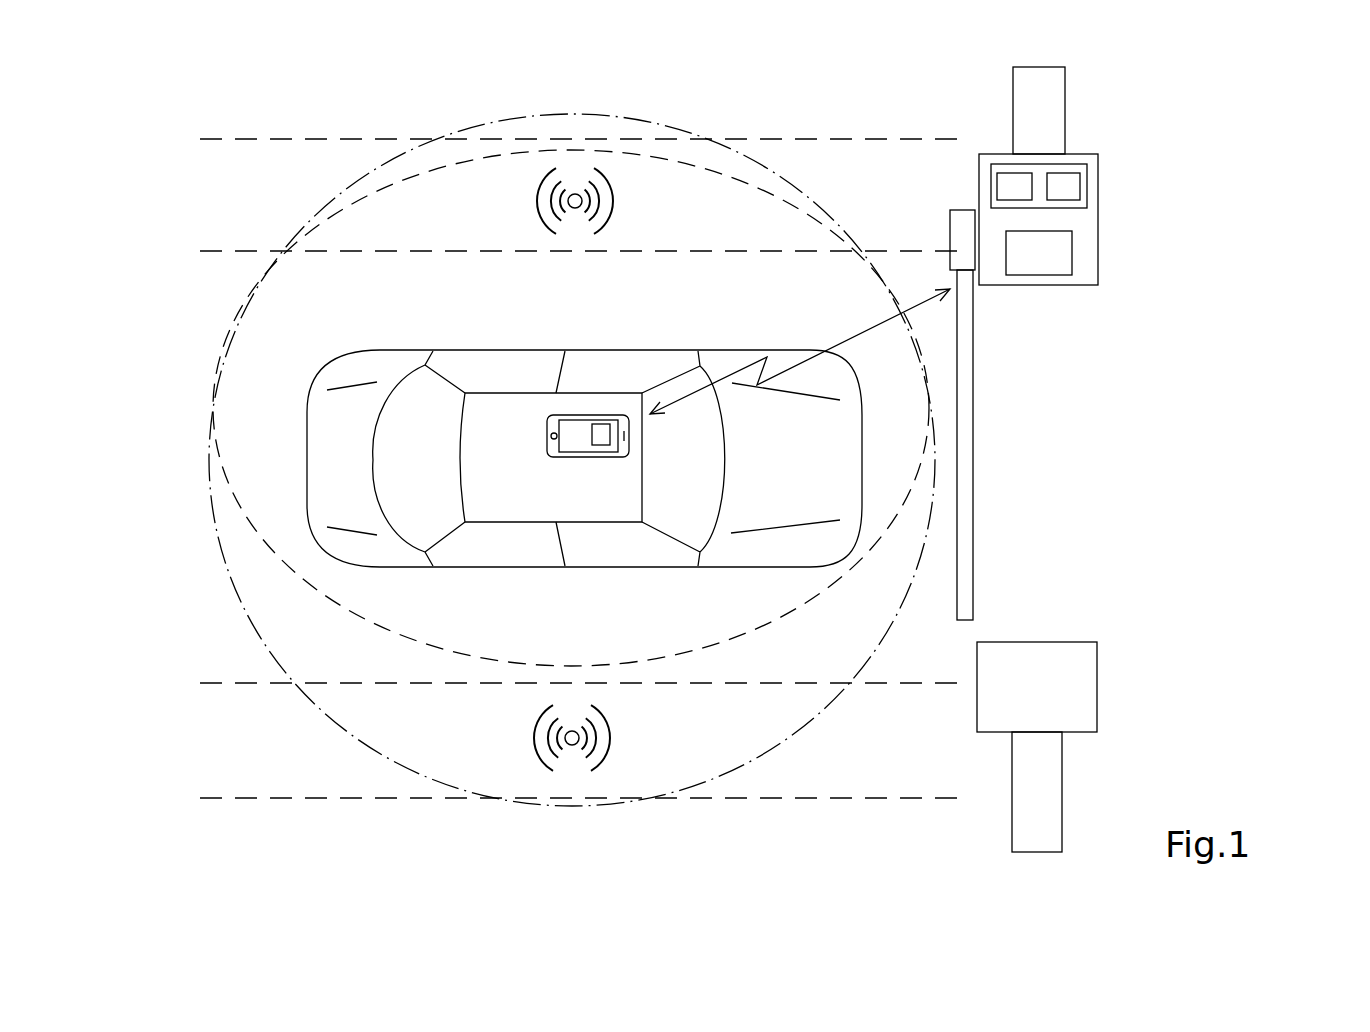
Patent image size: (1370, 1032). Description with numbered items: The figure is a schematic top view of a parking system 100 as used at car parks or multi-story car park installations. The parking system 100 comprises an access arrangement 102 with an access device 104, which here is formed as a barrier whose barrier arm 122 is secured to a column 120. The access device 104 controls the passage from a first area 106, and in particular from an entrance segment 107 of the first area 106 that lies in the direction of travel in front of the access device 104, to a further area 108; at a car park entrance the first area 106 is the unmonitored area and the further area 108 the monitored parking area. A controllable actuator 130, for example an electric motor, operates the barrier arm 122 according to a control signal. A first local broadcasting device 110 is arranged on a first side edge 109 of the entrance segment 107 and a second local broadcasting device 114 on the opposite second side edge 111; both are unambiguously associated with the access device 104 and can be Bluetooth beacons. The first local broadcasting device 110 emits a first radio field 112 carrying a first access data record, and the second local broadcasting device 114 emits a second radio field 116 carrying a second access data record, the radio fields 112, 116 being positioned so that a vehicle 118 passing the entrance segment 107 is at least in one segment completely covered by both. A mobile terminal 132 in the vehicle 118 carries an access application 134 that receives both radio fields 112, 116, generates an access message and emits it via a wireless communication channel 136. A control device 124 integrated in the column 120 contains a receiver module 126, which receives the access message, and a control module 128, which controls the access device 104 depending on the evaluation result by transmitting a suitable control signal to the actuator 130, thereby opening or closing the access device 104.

The parking system 100 is at (1266, 113).
The access arrangement 102 is at (1122, 288).
The access device 104 is at (1118, 479).
The first area 106 is at (303, 763).
The entrance segment 107 is at (190, 483).
The further area 108 is at (1287, 762).
The first side edge 109 is at (190, 190).
The first local broadcasting device 110 is at (628, 210).
The second side edge 111 is at (190, 744).
The first radio field 112 is at (467, 658).
The second local broadcasting device 114 is at (628, 733).
The second radio field 116 is at (417, 777).
The vehicle 118 is at (807, 471).
The column 120 is at (1100, 218).
The barrier arm 122 is at (965, 410).
The control device 124 is at (1100, 183).
The receiver module 126 is at (1008, 168).
The control module 128 is at (1070, 168).
The actuator 130 is at (1056, 263).
The mobile terminal 132 is at (547, 436).
The access application 134 is at (600, 447).
The wireless communication channel 136 is at (858, 333).